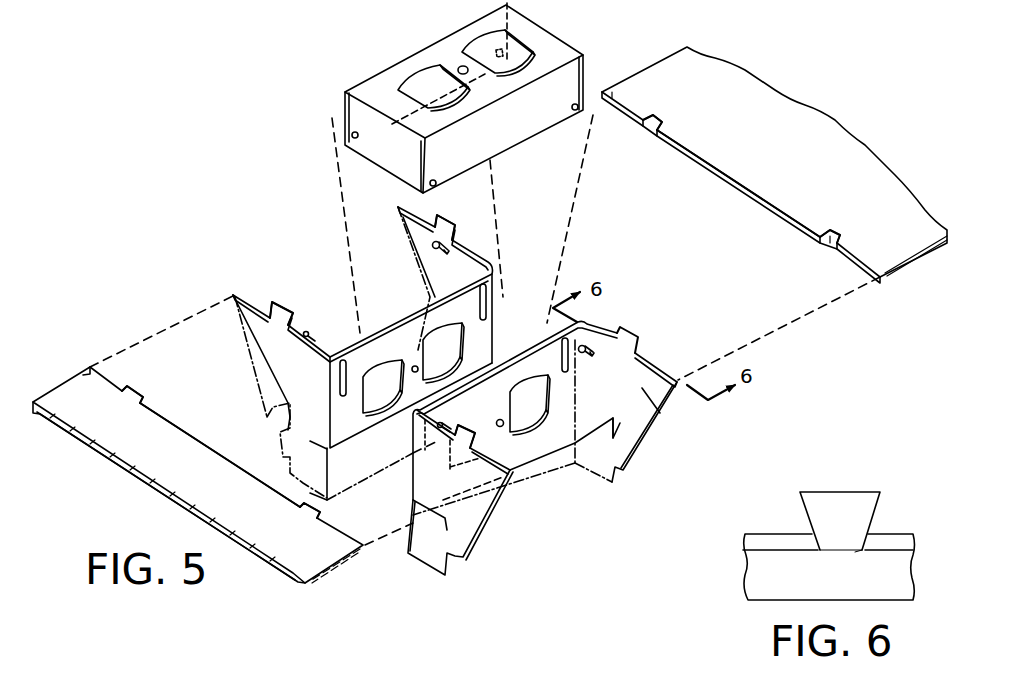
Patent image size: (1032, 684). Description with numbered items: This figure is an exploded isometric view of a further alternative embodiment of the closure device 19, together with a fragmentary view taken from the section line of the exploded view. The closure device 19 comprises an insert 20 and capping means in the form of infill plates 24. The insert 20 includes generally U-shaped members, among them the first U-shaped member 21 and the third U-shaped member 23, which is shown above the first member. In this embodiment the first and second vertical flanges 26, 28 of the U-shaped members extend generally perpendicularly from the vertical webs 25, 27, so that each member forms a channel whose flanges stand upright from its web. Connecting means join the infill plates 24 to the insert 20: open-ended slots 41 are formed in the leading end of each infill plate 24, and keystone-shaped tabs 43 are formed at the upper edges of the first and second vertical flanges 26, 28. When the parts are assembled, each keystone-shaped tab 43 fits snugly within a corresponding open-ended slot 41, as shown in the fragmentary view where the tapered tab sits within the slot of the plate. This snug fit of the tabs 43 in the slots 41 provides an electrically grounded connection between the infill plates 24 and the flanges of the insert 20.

In FIG. 5, the closure device 19 is at (794, 89).
In FIG. 5, the insert 20 is at (280, 176).
In FIG. 5, the first U-shaped member 21 is at (636, 424).
In FIG. 5, the third U-shaped member 23 is at (427, 42).
In FIG. 6, the infill plate 24 is at (883, 527).
In FIG. 5, the vertical web 25 is at (528, 437).
In FIG. 5, the first vertical flange 26 is at (642, 388).
In FIG. 5, the vertical web 27 is at (435, 307).
In FIG. 5, the second vertical flange 28 is at (250, 305).
In FIG. 5, the open-ended slot 41 is at (662, 122).
In FIG. 6, the open-ended slot 41 is at (858, 548).
In FIG. 5, the keystone-shaped tab 43 is at (272, 302).
In FIG. 6, the keystone-shaped tab 43 is at (827, 500).